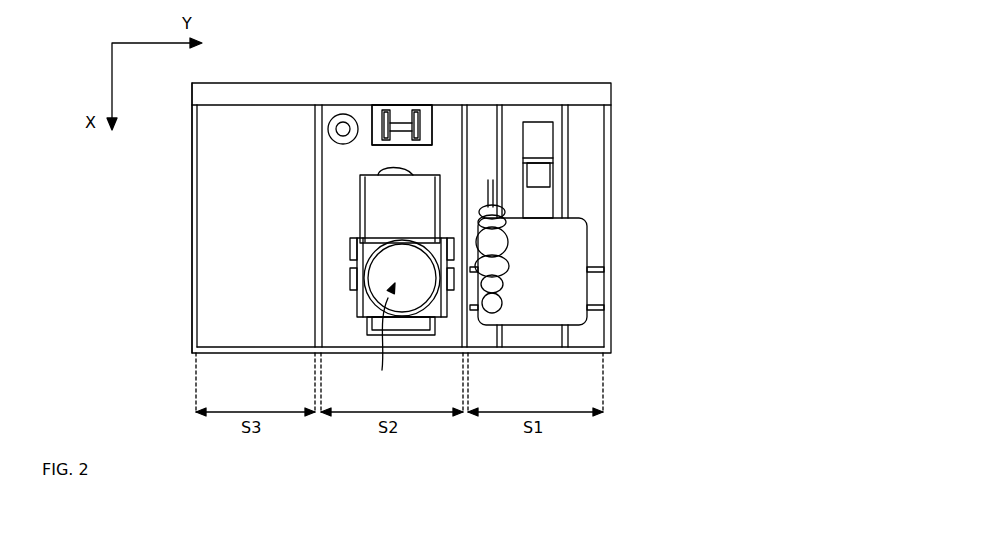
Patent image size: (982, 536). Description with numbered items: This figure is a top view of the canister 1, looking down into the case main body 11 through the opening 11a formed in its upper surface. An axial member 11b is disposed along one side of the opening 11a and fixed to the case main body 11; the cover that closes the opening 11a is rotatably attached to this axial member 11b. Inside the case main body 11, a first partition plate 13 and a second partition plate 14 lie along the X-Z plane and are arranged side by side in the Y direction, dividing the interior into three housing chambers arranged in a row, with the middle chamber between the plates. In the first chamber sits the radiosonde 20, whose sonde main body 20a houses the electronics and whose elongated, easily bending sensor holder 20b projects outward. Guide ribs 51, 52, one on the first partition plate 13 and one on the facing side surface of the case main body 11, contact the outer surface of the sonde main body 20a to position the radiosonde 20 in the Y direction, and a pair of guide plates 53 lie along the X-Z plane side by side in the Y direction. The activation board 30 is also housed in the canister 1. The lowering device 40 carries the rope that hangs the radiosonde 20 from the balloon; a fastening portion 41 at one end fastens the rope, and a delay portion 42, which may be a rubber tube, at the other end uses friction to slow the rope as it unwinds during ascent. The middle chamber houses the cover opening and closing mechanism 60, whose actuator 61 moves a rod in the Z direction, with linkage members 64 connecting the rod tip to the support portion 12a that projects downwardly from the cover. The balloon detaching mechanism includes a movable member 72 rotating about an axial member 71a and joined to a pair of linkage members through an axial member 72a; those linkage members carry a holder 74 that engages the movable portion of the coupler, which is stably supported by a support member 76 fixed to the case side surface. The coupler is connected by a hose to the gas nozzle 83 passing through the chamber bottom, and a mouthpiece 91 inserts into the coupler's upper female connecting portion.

The canister 1 is at (632, 66).
The case main body 11 is at (192, 238).
The opening 11a is at (228, 347).
The axial member 11b is at (248, 95).
The support portion 12a is at (398, 123).
The first partition plate 13 is at (464, 325).
The second partition plate 14 is at (312, 335).
The radiosonde 20 is at (605, 225).
The sonde main body 20a is at (540, 287).
The sensor holder 20b is at (540, 135).
The activation board 30 is at (593, 267).
The lowering device 40 is at (570, 270).
The fastening portion 41 is at (495, 303).
The delay portion 42 is at (494, 176).
The guide rib 51 is at (478, 310).
The guide rib 52 is at (595, 310).
The guide plate 53 is at (500, 123).
The cover opening and closing mechanism 60 is at (440, 110).
The actuator 61 is at (387, 72).
The linkage member 64 is at (393, 118).
The axial member 71a is at (350, 245).
The movable member 72 is at (392, 203).
The axial member 72a is at (350, 273).
The holder 74 is at (357, 318).
The support member 76 is at (425, 322).
The gas nozzle 83 is at (330, 110).
The mouthpiece 91 is at (384, 336).